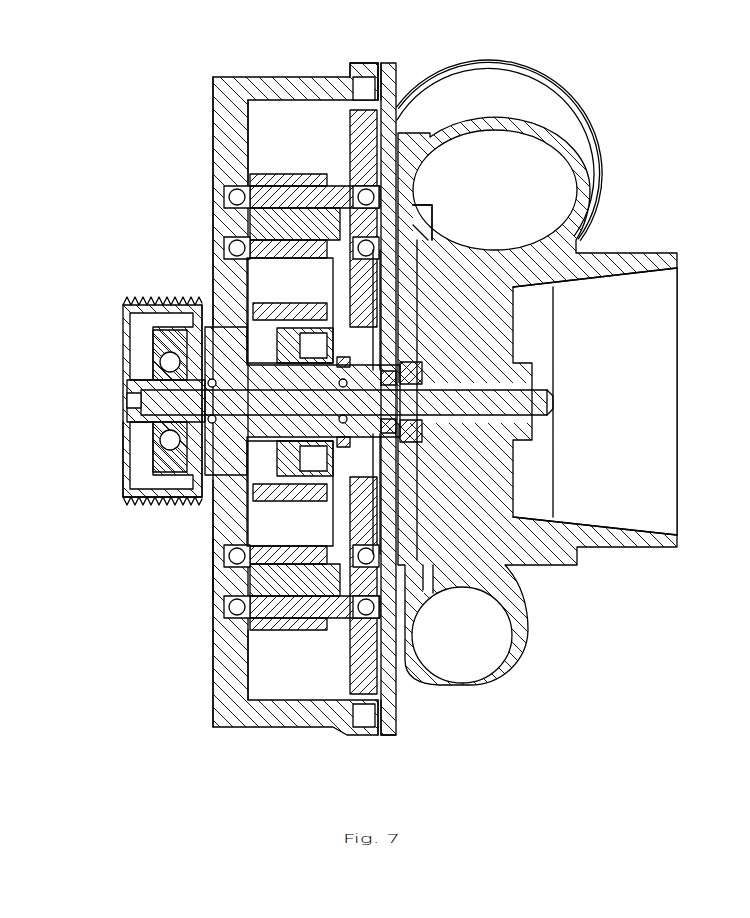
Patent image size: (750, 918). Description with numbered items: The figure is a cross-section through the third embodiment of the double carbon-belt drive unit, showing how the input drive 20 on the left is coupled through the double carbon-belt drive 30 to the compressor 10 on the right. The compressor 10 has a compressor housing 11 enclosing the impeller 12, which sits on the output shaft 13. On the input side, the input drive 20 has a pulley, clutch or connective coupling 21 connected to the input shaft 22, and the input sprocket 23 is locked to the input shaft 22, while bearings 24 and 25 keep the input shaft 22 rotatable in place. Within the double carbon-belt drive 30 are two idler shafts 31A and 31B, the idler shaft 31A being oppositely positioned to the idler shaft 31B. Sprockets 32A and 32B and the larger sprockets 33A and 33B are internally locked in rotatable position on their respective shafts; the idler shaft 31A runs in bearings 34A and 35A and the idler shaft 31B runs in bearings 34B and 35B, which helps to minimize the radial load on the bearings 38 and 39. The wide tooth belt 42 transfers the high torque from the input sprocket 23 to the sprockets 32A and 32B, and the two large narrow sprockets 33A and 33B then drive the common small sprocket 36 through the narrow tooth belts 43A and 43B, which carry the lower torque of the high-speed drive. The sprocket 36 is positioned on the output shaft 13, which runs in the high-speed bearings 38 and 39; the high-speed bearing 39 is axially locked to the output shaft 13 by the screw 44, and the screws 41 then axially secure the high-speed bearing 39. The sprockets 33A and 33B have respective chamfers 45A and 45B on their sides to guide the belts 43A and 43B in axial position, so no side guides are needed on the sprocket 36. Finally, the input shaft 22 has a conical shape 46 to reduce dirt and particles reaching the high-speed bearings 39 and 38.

The compressor 10 is at (560, 65).
The compressor housing 11 is at (576, 150).
The impeller 12 is at (522, 352).
The output shaft 13 is at (558, 403).
The input drive 20 is at (112, 290).
The pulley, clutch or connective coupling 21 is at (150, 300).
The input shaft 22 is at (228, 355).
The input sprocket 23 is at (217, 570).
The bearing 24 is at (152, 451).
The bearing 25 is at (204, 500).
The double carbon-belt drive 30 is at (213, 70).
The idler shaft 31A is at (255, 215).
The idler shaft 31B is at (228, 598).
The sprocket 32A is at (222, 170).
The sprocket 32B is at (218, 648).
The larger sprocket 33A is at (347, 77).
The larger sprocket 33B is at (396, 728).
The bearing 34A is at (240, 192).
The bearing 34B is at (236, 622).
The bearing 35A is at (400, 167).
The bearing 35B is at (412, 668).
The common small sprocket 36 is at (398, 438).
The high-speed bearing 38 is at (400, 378).
The high-speed bearing 39 is at (160, 372).
The screws 41 is at (155, 342).
The wide tooth belt 42 is at (262, 262).
The narrow tooth belt 43A is at (545, 337).
The narrow tooth belt 43B is at (400, 483).
The screw 44 is at (192, 403).
The chamfer 45A is at (386, 98).
The chamfer 45B is at (352, 722).
The conical shape 46 is at (398, 445).